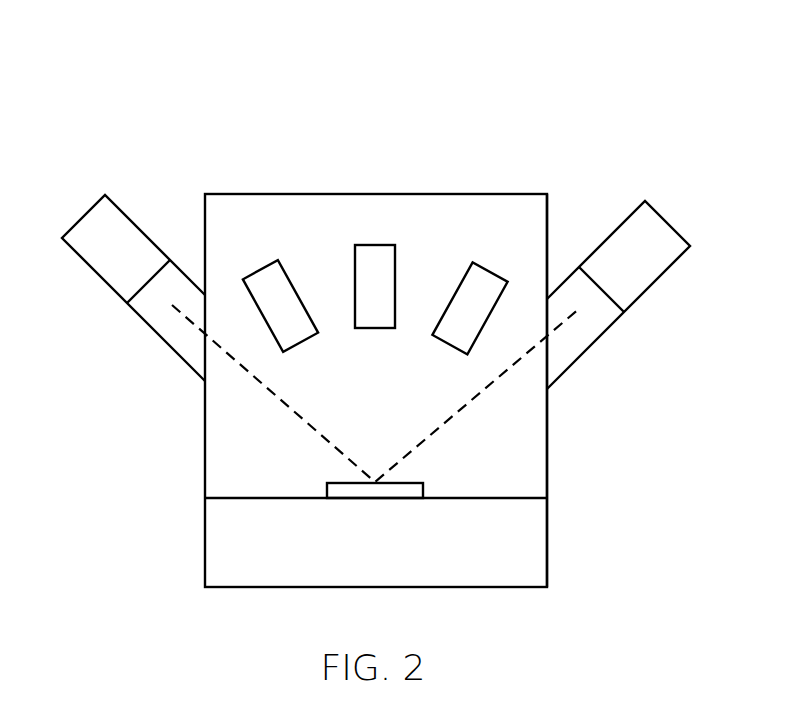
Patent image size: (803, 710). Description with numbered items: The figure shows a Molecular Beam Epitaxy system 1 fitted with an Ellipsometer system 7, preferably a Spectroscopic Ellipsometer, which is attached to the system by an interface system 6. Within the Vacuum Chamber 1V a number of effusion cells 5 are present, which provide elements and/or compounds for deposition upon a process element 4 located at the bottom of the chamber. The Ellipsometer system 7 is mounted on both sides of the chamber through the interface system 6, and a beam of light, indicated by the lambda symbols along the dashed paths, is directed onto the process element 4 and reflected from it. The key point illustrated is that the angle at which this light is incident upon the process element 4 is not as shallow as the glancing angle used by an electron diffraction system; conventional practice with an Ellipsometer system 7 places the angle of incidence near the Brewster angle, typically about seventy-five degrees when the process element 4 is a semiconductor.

The Molecular Beam Epitaxy system 1 is at (578, 147).
The vacuum chamber 1V is at (556, 232).
The process element 4 is at (419, 473).
The effusion cells 5 is at (375, 299).
The interface system 6 is at (157, 353).
The ellipsometer system 7 is at (378, 278).